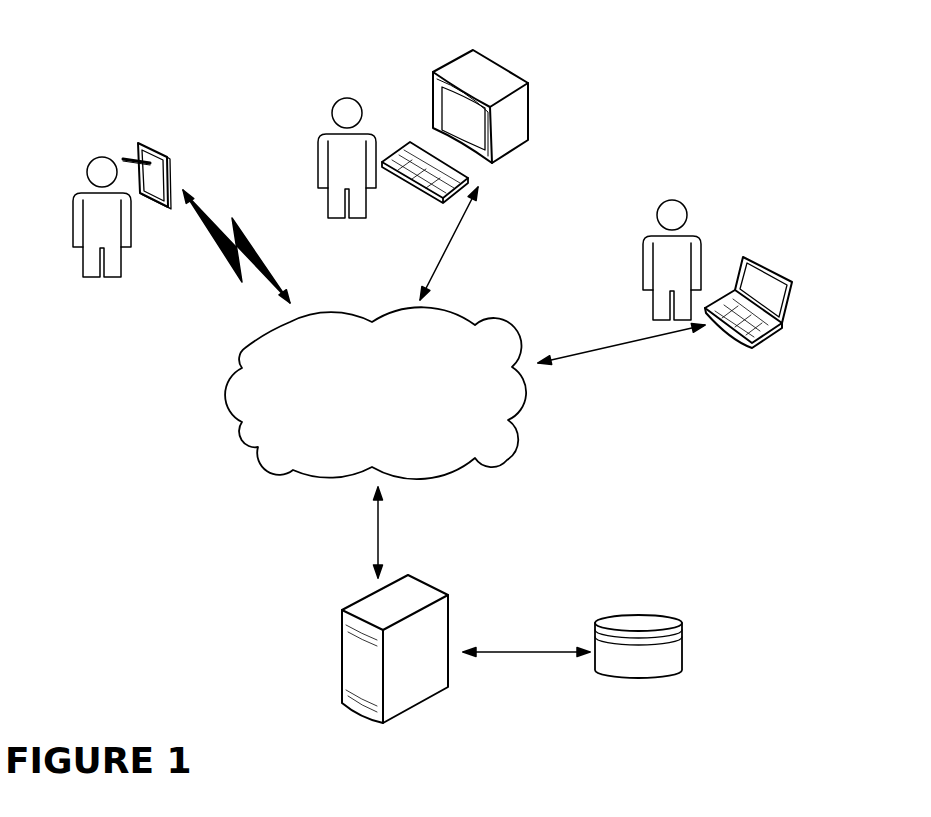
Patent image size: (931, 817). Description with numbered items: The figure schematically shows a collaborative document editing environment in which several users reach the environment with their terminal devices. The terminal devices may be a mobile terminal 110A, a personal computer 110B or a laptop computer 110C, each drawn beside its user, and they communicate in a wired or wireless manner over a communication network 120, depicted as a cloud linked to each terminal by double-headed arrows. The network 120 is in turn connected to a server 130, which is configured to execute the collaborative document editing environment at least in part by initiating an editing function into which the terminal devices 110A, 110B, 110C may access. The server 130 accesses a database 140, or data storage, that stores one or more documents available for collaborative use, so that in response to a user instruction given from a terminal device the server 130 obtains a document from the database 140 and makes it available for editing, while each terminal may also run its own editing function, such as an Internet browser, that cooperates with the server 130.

The mobile terminal 110A is at (171, 167).
The personal computer 110B is at (500, 66).
The laptop computer 110C is at (782, 269).
The communication network 120 is at (260, 448).
The server 130 is at (451, 595).
The database 140 is at (663, 615).